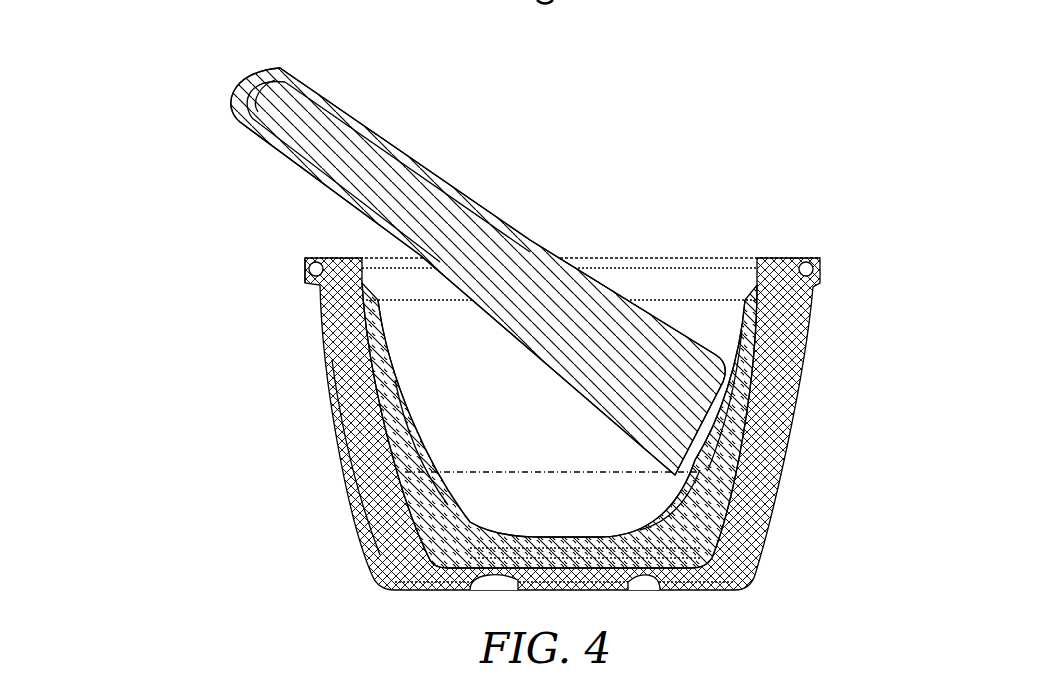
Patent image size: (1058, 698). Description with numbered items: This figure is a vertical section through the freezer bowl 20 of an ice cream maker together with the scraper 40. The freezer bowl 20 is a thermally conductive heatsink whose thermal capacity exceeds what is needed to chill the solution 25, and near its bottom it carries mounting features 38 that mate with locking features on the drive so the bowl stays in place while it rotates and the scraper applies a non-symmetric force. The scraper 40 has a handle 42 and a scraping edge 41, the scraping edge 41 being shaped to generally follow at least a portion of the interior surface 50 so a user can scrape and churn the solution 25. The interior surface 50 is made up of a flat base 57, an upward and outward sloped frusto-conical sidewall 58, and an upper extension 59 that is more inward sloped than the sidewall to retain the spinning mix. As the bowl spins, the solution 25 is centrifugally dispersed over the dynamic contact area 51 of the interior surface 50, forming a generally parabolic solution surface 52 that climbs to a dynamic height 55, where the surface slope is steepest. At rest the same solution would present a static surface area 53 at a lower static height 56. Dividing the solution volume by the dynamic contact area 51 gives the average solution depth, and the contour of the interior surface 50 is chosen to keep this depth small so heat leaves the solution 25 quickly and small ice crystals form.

The freezer bowl 20 is at (842, 224).
The solution 25 is at (687, 507).
The mounting features 38 is at (505, 590).
The scraper 40 is at (200, 58).
The scraping edge 41 is at (728, 428).
The handle 42 is at (348, 157).
The interior surface 50 is at (363, 282).
The dynamic contact area 51 is at (381, 393).
The solution surface 52 is at (411, 430).
The static surface area 53 is at (503, 543).
The dynamic height 55 is at (400, 300).
The static height 56 is at (453, 474).
The base 57 is at (467, 548).
The sidewall 58 is at (387, 421).
The upper extension 59 is at (360, 293).